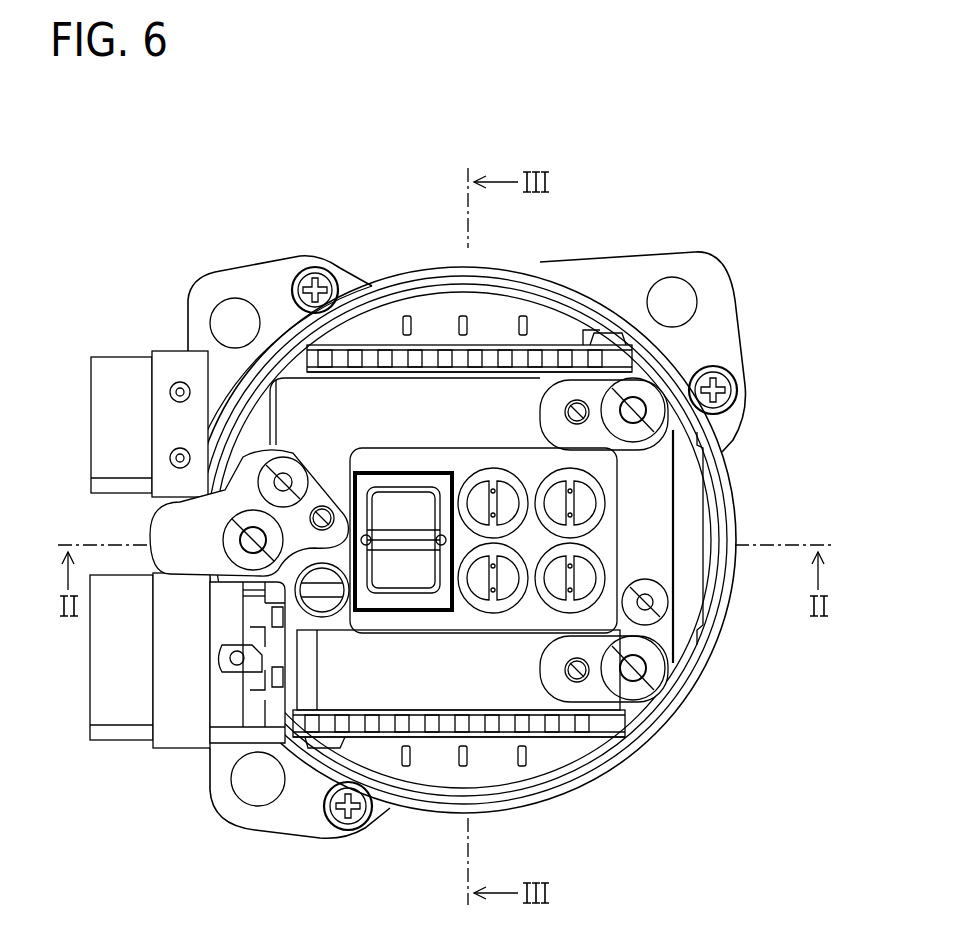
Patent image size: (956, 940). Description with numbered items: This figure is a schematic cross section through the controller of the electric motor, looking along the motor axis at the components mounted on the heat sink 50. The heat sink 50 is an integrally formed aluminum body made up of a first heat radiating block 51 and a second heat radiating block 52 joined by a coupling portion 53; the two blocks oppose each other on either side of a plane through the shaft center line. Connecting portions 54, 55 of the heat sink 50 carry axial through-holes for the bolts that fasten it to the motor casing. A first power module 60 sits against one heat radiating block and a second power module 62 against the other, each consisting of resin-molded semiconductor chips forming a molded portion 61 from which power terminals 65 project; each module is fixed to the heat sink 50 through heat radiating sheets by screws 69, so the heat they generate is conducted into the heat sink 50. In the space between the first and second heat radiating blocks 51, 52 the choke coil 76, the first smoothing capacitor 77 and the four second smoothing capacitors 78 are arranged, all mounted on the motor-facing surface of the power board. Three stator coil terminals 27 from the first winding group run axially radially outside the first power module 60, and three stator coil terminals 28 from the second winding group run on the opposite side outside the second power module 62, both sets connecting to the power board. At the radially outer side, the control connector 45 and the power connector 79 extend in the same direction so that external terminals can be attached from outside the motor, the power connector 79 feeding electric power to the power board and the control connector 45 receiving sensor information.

The stator coil terminals 27 is at (407, 316).
The stator coil terminals 28 is at (406, 766).
The control connector 45 is at (91, 400).
The heat sink 50 is at (293, 402).
The first heat radiating block 51 is at (315, 385).
The second heat radiating block 52 is at (330, 690).
The coupling portion 53 is at (650, 522).
The connecting portion 54 is at (240, 545).
The connecting portion 55 is at (655, 393).
The first power module 60 is at (560, 335).
The molded portion 61 is at (440, 345).
The second power module 62 is at (560, 760).
The power terminals 65 is at (490, 357).
The screws 69 is at (612, 340).
The choke coil 76 is at (388, 505).
The first smoothing capacitor 77 is at (300, 590).
The second smoothing capacitors 78 is at (540, 503).
The power connector 79 is at (90, 705).